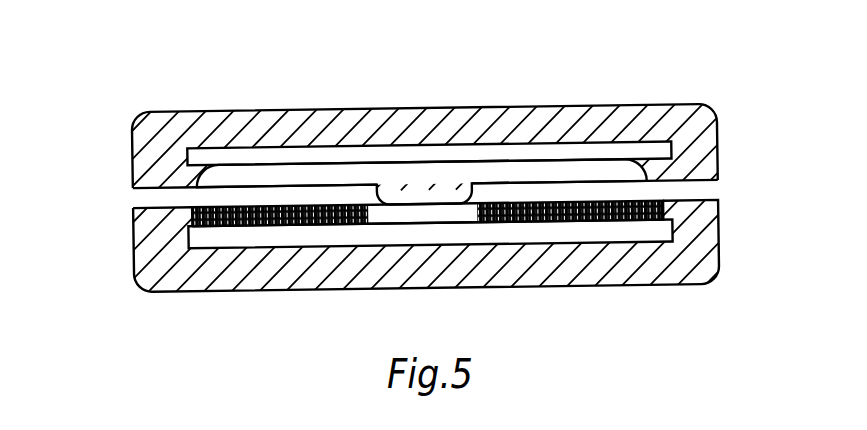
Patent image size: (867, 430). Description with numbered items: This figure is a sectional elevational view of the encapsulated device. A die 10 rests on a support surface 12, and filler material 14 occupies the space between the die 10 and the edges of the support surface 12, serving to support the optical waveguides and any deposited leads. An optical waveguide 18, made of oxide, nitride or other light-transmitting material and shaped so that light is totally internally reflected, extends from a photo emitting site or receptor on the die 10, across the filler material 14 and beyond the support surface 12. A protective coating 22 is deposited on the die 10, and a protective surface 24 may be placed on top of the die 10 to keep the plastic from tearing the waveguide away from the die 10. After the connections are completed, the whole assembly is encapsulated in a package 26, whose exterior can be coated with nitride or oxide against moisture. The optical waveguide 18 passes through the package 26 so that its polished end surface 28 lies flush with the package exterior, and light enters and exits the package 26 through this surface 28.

The die 10 is at (444, 212).
The support surface 12 is at (285, 243).
The filler material 14 is at (346, 212).
The optical waveguide 18 is at (283, 190).
The protective coating 22 is at (430, 200).
The protective surface 24 is at (436, 148).
The package 26 is at (710, 114).
The surface of optical waveguide 28 is at (143, 194).